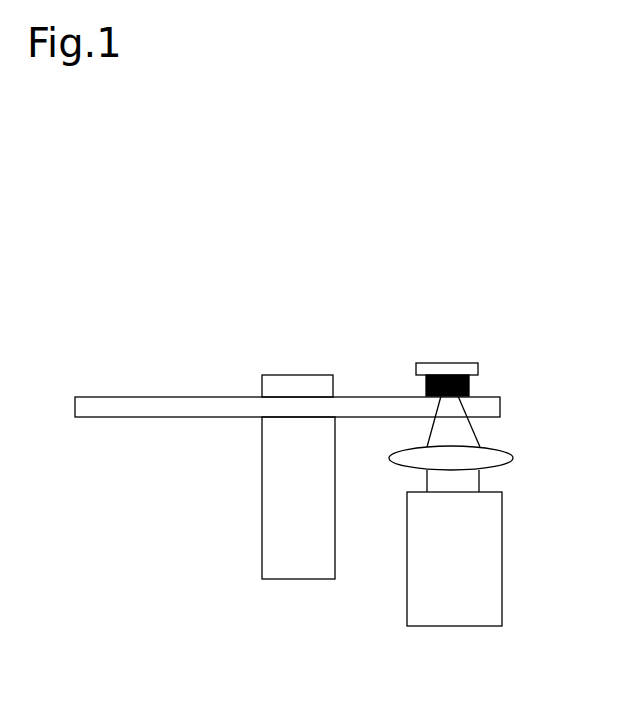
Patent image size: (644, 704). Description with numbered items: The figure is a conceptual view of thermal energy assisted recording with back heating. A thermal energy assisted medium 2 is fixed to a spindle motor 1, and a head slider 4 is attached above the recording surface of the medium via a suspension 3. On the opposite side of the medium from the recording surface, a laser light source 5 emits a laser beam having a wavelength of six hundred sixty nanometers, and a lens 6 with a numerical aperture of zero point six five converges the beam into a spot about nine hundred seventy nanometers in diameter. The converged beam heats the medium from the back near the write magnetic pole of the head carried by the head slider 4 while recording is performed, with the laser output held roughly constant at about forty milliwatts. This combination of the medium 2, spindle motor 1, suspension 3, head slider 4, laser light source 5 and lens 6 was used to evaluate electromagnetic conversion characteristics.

The spindle motor 1 is at (262, 530).
The thermal energy assisted medium 2 is at (133, 397).
The suspension 3 is at (462, 362).
The head slider 4 is at (426, 388).
The laser light source 5 is at (502, 558).
The lens 6 is at (508, 458).